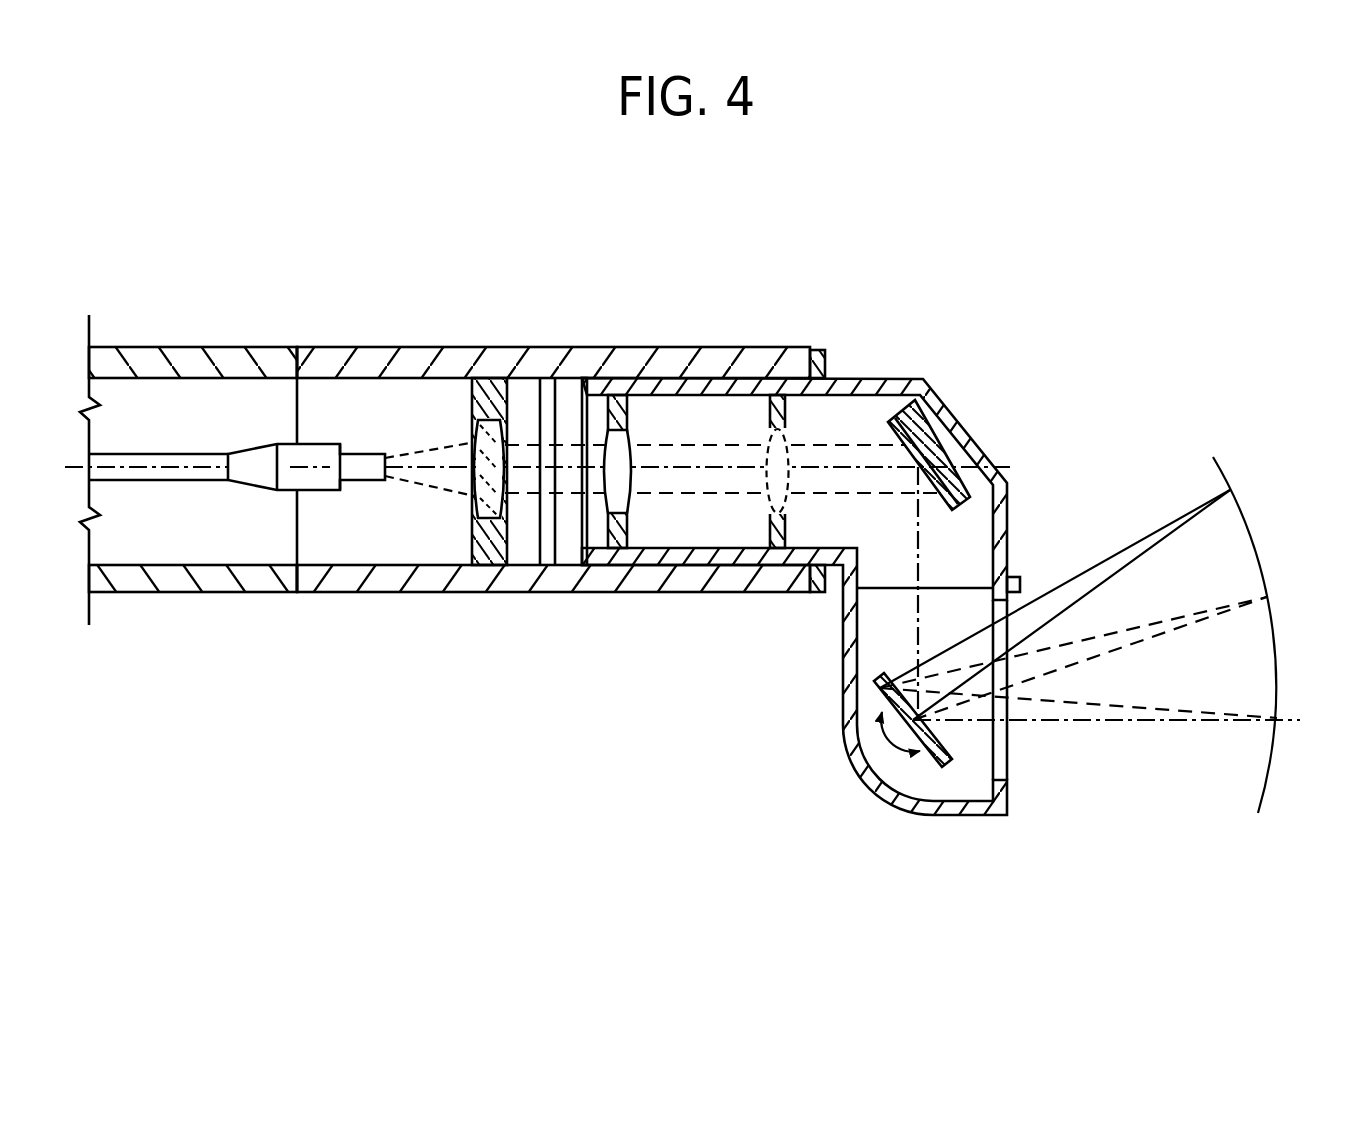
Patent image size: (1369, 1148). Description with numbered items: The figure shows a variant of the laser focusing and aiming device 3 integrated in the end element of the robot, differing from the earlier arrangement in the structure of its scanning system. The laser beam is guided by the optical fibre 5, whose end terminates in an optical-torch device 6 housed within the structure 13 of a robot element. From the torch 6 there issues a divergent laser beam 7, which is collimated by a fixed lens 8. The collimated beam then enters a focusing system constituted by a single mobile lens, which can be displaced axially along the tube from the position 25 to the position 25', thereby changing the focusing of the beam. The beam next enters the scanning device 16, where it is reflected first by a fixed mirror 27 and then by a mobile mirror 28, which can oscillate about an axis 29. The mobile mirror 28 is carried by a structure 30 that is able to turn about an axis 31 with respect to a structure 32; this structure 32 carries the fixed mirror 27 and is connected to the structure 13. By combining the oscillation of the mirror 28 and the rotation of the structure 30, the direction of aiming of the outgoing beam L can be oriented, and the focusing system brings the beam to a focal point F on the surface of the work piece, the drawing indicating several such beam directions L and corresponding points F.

The focusing and aiming device 3 is at (748, 318).
The optical fibre 5 is at (177, 473).
The optical-torch device 6 is at (322, 490).
The divergent laser beam 7 is at (465, 437).
The fixed lens 8 is at (470, 505).
The structure 13 is at (432, 345).
The scanning device 16 is at (928, 376).
The mobile lens position 25 is at (617, 535).
The mobile lens position 25' is at (746, 527).
The fixed mirror 27 is at (1000, 450).
The mobile mirror 28 is at (956, 770).
The axis 29 is at (905, 745).
The structure 30 is at (838, 718).
The axis 31 is at (920, 557).
The structure 32 is at (965, 398).
The focal point F is at (1232, 490).
The light beam L is at (1137, 537).